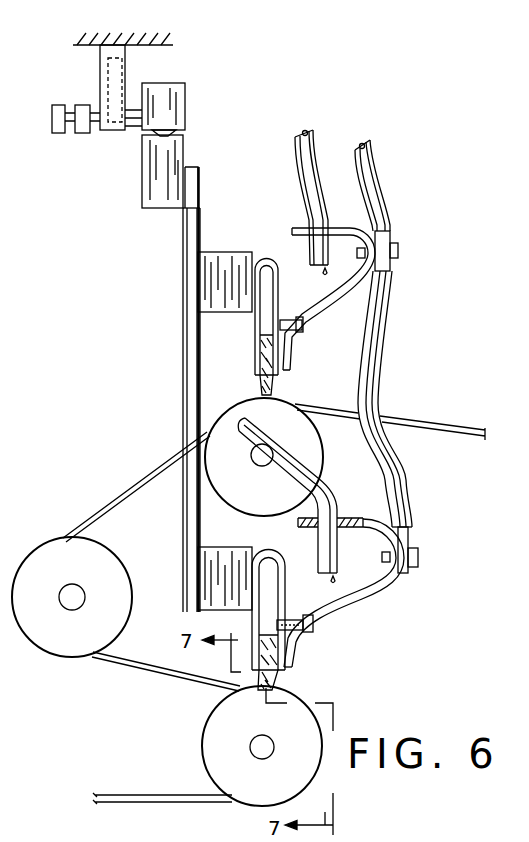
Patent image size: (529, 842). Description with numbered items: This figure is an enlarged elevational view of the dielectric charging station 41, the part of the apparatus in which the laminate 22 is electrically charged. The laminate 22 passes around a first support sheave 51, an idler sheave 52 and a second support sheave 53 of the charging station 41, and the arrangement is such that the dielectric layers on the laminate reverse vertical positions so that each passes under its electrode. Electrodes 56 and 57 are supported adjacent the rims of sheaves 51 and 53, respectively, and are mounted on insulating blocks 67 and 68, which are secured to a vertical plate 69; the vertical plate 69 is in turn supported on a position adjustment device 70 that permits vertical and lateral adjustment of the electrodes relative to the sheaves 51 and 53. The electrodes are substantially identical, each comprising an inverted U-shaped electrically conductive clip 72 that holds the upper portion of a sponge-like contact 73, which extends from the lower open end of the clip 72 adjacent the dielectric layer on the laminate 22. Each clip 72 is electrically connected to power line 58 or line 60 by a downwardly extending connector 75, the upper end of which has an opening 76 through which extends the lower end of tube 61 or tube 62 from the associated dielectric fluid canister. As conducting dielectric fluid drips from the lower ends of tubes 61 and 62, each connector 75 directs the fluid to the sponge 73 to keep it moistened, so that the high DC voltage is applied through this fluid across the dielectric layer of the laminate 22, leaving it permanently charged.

The position adjustment device 70 is at (203, 94).
The vertical plate 69 is at (187, 318).
The insulating block 68 is at (200, 270).
The insulating block 67 is at (213, 570).
The tube 61 is at (316, 138).
The line 60 is at (367, 146).
The line 58 is at (388, 345).
The connector 75 is at (318, 297).
The inverted U-shaped electrically conductive clip 72 is at (270, 258).
The sponge-like contact 73 is at (260, 378).
The electrode 57 is at (301, 344).
The electrode 56 is at (318, 644).
The second support sheave 53 is at (303, 433).
The tube 62 is at (318, 498).
The opening 76 is at (332, 508).
The charging station 41 is at (427, 119).
The idler sheave 52 is at (72, 640).
The first support sheave 51 is at (295, 775).
The laminate 22 is at (137, 795).